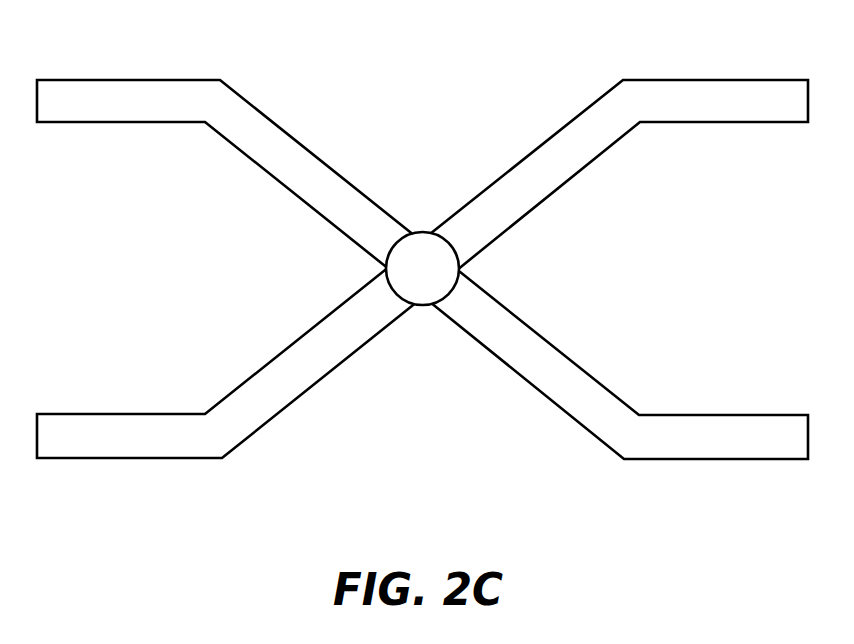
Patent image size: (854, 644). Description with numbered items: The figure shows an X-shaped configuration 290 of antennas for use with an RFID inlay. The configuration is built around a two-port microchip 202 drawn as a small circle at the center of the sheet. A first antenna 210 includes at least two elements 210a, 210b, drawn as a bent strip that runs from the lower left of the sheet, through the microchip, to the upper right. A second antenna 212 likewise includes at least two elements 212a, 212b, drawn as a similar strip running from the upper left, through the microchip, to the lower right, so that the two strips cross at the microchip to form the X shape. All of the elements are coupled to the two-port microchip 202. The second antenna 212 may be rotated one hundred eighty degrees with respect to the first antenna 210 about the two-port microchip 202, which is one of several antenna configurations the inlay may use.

The X-shaped configuration 290 is at (447, 63).
The two-port microchip 202 is at (417, 288).
The first antenna 210 is at (419, 306).
The element of first antenna 210a is at (290, 378).
The element of first antenna 210b is at (553, 175).
The second antenna 212 is at (427, 306).
The element of second antenna 212a is at (725, 425).
The element of second antenna 212b is at (277, 169).